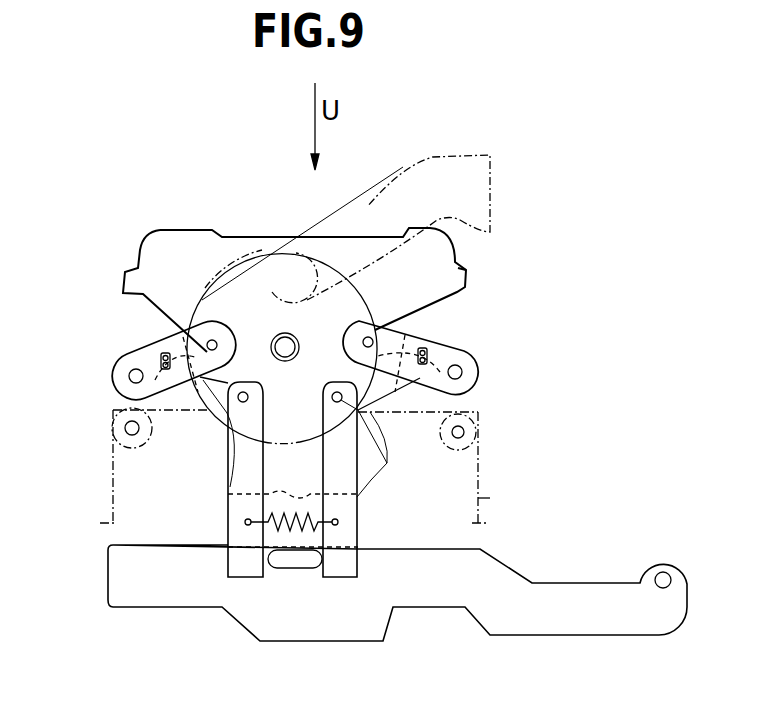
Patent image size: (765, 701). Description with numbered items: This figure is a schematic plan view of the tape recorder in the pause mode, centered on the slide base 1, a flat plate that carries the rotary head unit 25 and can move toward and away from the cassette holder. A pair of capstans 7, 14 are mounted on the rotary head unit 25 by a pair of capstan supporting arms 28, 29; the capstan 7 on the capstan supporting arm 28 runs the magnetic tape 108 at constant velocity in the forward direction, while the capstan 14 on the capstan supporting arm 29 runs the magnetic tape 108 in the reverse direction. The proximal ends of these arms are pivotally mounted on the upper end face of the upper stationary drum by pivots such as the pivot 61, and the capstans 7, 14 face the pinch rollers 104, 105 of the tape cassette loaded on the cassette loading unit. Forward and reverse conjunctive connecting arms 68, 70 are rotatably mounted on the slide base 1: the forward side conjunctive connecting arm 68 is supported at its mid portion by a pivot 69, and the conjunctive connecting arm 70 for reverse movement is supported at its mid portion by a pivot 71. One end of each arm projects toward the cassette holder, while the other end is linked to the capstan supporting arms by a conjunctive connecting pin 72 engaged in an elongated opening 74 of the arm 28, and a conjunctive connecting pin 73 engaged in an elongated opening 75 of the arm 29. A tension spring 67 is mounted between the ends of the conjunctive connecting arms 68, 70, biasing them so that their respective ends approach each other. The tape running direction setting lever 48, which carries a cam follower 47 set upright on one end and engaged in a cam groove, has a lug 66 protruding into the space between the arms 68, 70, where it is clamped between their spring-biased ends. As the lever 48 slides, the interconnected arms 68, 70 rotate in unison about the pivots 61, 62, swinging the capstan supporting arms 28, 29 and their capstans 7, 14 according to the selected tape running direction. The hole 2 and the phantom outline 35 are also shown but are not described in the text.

The slide base 1 is at (200, 228).
The shaft hole 2 is at (285, 333).
The capstan 7 is at (128, 370).
The capstan 14 is at (462, 380).
The rotary head unit 25 is at (198, 304).
The capstan supporting arm 28 is at (118, 396).
The capstan supporting arm 29 is at (480, 372).
The cam member 35 is at (367, 207).
The cam follower 47 is at (661, 572).
The tape running direction setting lever 48 is at (557, 636).
The pivot 61 is at (212, 340).
The pivot 62 is at (462, 265).
The lug 66 is at (305, 562).
The tension spring 67 is at (290, 512).
The forward side conjunctive connecting arm 68 is at (228, 515).
The pivot 69 is at (241, 401).
The conjunctive connecting arm for reverse movement 70 is at (358, 503).
The pivot 71 is at (387, 463).
The conjunctive connecting pin 72 is at (158, 360).
The conjunctive connecting pin 73 is at (425, 356).
The elongated opening 74 is at (160, 352).
The elongated opening 75 is at (442, 335).
The pinch roller 104 is at (112, 461).
The pinch roller 105 is at (473, 432).
The magnetic tape 108 is at (490, 498).